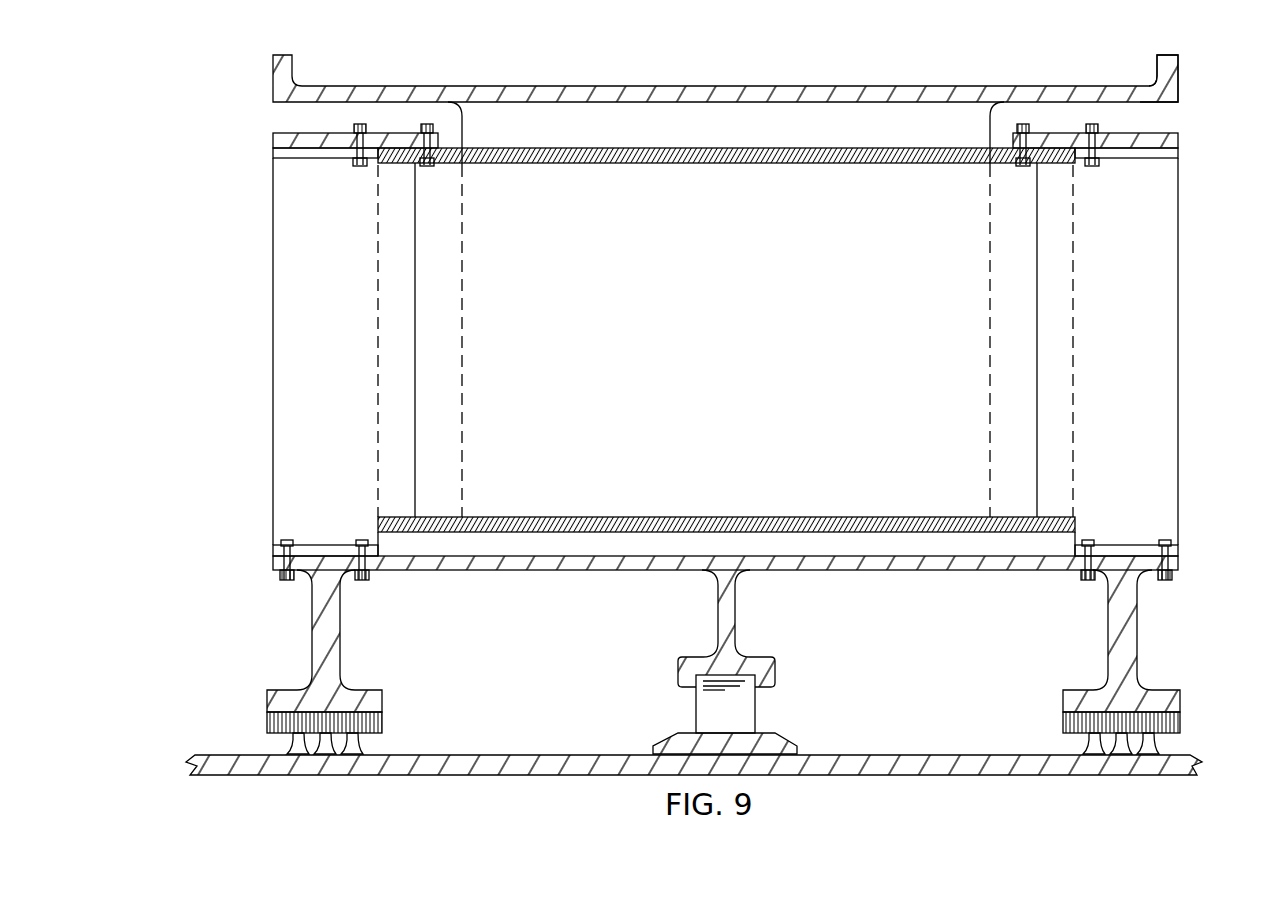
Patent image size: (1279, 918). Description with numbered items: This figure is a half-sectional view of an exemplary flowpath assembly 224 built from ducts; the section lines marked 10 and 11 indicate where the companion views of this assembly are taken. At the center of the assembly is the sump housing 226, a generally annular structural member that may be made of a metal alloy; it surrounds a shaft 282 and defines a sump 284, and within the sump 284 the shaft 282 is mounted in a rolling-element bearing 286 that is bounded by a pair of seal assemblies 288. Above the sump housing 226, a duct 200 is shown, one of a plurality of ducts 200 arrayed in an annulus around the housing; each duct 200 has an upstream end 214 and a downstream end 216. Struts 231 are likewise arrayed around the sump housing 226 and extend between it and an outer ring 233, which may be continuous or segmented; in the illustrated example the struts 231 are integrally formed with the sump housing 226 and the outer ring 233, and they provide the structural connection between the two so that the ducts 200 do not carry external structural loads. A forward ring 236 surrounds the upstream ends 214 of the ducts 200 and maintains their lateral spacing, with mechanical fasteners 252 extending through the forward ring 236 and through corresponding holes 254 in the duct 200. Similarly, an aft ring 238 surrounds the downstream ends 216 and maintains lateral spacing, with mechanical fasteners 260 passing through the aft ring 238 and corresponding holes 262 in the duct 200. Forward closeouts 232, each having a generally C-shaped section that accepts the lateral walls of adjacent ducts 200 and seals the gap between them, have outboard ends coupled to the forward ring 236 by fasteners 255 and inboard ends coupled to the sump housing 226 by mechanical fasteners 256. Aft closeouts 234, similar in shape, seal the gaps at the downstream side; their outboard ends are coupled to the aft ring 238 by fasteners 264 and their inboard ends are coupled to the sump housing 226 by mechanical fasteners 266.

The duct 10 is at (200, 47).
The section line 11- 11 is at (263, 275).
The duct 200 is at (688, 150).
The upstream end 214 is at (378, 380).
The downstream end 216 is at (1073, 383).
The flowpath assembly 224 is at (808, 76).
The sump housing 226 is at (652, 572).
The strut 231 is at (610, 136).
The forward closeout 232 is at (273, 420).
The outer ring 233 is at (1133, 95).
The aft closeout 234 is at (1178, 428).
The forward ring 236 is at (307, 138).
The aft ring 238 is at (1165, 133).
The mechanical fastener 252 is at (428, 126).
The hole 254 is at (434, 166).
The fastener 255 is at (357, 165).
The mechanical fastener 256 is at (362, 540).
The mechanical fastener 260 is at (1025, 127).
The hole 262 is at (1012, 155).
The fastener 264 is at (1095, 127).
The mechanical fastener 266 is at (1165, 540).
The shaft 282 is at (453, 755).
The sump 284 is at (550, 669).
The rolling-element bearing 286 is at (779, 719).
The seal assembly 288 is at (362, 676).